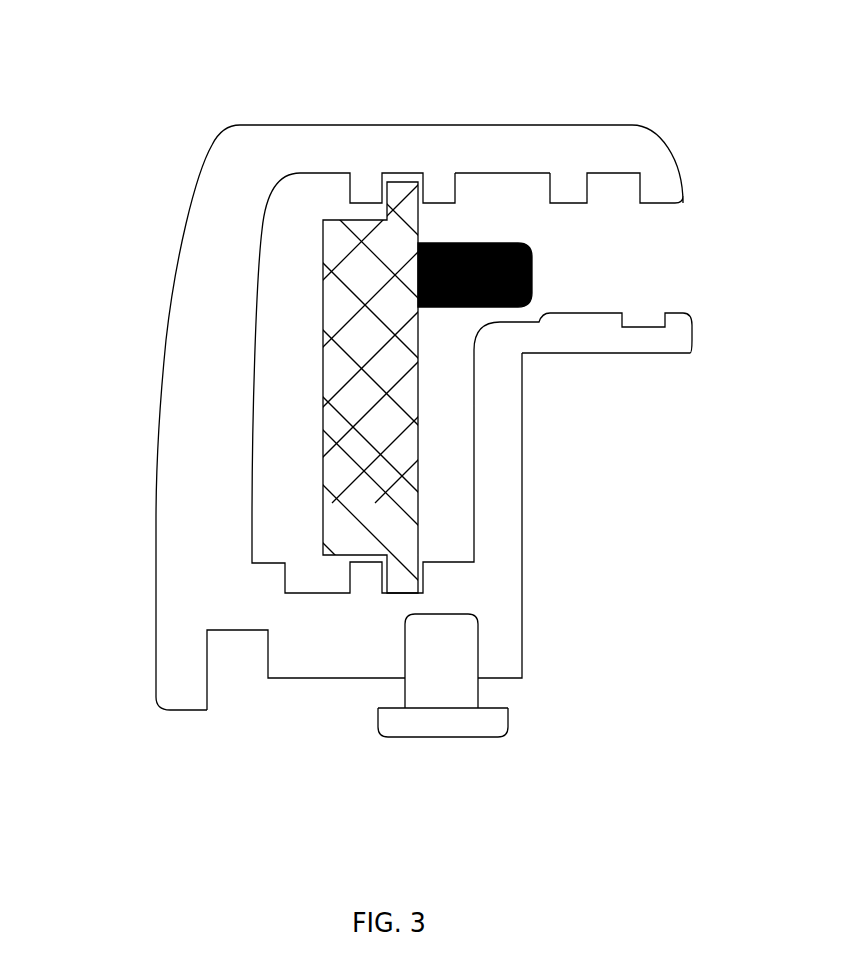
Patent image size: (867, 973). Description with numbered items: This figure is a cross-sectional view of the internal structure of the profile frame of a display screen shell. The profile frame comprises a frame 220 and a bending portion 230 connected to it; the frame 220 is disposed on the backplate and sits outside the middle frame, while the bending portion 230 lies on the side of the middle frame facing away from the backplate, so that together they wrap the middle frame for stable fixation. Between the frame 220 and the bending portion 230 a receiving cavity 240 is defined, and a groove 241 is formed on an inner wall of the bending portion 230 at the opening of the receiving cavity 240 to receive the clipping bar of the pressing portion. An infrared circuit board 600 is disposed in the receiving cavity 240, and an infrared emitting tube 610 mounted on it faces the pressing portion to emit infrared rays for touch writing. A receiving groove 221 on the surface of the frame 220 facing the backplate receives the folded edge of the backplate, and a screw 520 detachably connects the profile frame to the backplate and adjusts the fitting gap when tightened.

The frame 220 is at (200, 373).
The receiving groove 221 is at (245, 662).
The bending portion 230 is at (375, 148).
The receiving cavity 240 is at (573, 191).
The groove 241 is at (616, 129).
The screw 520 is at (445, 693).
The infrared circuit board 600 is at (393, 440).
The infrared emitting tube 610 is at (510, 303).